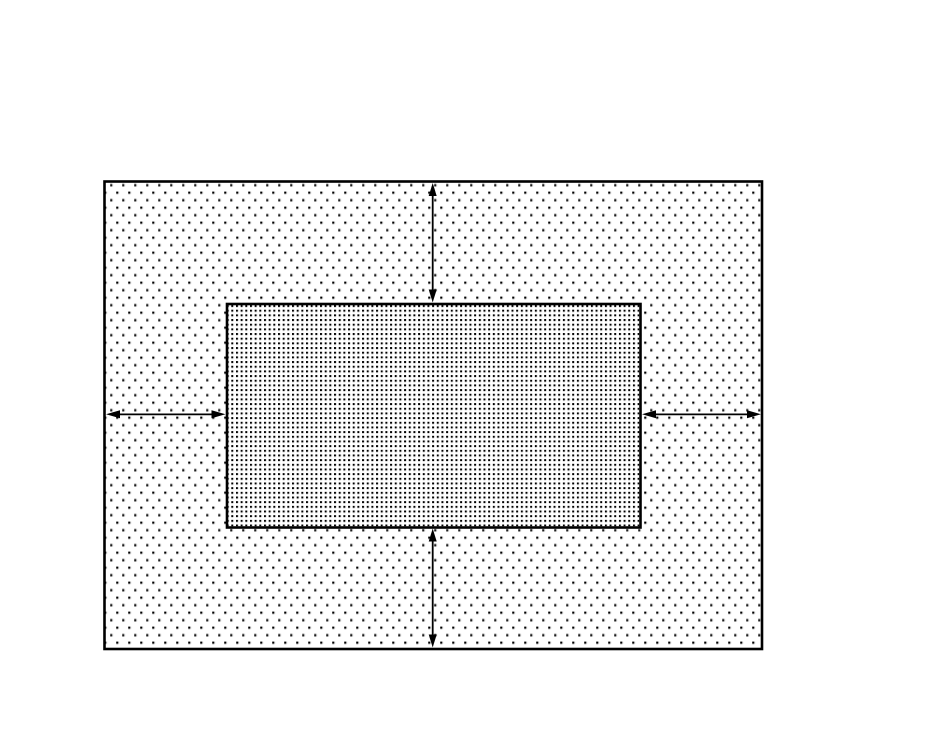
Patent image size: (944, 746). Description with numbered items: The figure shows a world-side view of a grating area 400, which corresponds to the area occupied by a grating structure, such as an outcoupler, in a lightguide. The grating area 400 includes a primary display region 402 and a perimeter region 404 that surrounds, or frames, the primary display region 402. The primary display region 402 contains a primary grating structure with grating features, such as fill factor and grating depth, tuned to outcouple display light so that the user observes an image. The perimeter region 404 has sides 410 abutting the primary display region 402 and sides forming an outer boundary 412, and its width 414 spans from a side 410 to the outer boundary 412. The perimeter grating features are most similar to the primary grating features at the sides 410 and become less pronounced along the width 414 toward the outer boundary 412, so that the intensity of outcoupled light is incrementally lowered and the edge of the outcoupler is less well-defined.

The grating area 400 is at (191, 107).
The primary display region 402 is at (456, 432).
The perimeter region 404 is at (617, 258).
The sides 410 is at (407, 305).
The outer boundary 412 is at (300, 181).
The width 414 is at (430, 242).